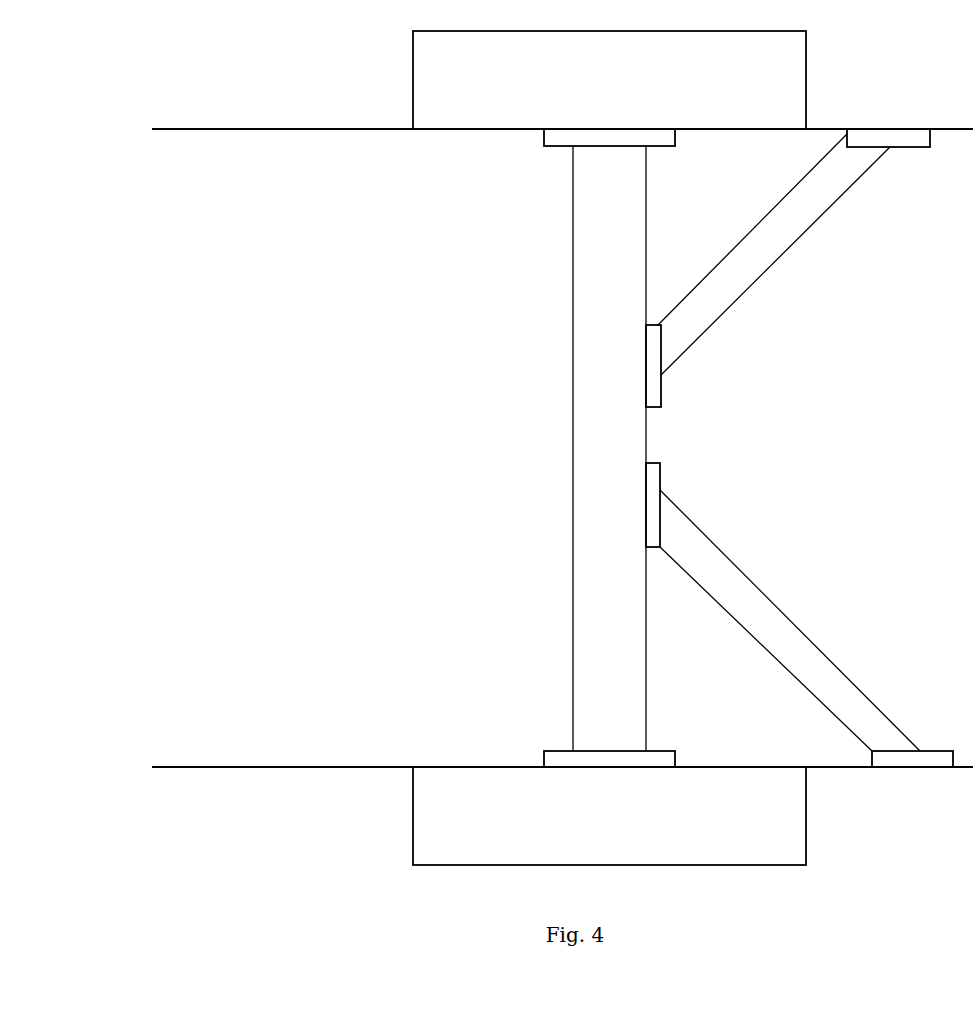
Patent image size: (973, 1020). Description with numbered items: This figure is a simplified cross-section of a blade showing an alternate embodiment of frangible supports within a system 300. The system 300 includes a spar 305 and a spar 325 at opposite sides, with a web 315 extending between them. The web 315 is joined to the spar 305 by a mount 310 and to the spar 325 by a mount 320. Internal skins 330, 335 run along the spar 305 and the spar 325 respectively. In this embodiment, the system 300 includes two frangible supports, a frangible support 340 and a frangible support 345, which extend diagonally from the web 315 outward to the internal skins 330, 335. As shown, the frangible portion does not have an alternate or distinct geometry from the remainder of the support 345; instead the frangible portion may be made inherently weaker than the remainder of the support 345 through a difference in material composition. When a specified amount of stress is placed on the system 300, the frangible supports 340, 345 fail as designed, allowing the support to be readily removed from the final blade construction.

The system 300 is at (146, 292).
The spar 305 is at (609, 80).
The mount 310 is at (555, 137).
The web 315 is at (609, 448).
The mount 320 is at (548, 760).
The spar 325 is at (609, 816).
The internal skin 330 is at (258, 129).
The internal skin 335 is at (348, 767).
The frangible support 340 is at (727, 228).
The frangible support 345 is at (799, 510).